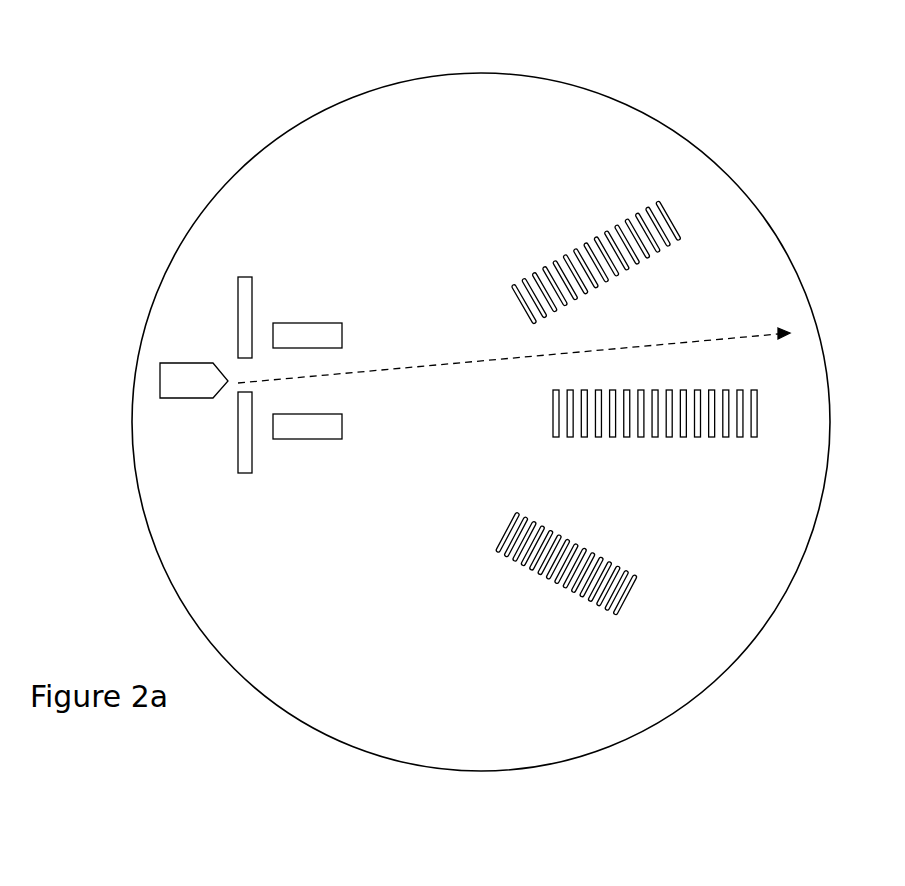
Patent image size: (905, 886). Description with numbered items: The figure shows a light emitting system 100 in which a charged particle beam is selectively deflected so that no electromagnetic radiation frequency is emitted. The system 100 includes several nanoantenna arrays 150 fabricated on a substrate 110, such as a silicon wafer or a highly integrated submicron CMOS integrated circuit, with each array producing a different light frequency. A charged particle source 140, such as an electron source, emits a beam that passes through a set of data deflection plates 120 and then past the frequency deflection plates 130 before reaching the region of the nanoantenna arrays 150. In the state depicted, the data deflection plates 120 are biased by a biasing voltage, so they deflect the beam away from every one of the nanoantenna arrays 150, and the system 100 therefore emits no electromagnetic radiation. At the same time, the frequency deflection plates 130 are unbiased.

The light emitting system 100 is at (203, 119).
The substrate 110 is at (315, 728).
The data deflection plates 120 is at (238, 320).
The frequency deflection plates 130 is at (305, 323).
The charged particle source 140 is at (188, 398).
The nanoantenna arrays 150 is at (662, 207).